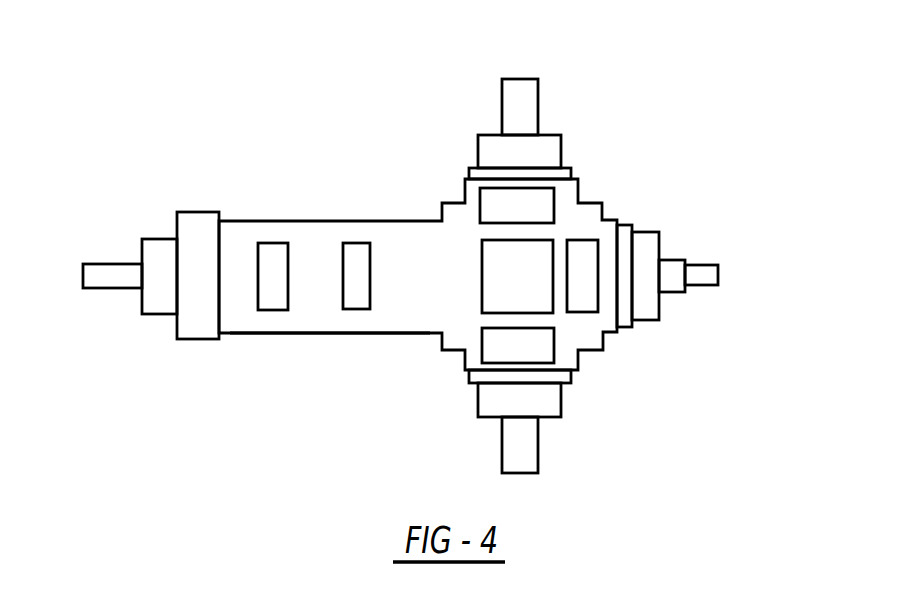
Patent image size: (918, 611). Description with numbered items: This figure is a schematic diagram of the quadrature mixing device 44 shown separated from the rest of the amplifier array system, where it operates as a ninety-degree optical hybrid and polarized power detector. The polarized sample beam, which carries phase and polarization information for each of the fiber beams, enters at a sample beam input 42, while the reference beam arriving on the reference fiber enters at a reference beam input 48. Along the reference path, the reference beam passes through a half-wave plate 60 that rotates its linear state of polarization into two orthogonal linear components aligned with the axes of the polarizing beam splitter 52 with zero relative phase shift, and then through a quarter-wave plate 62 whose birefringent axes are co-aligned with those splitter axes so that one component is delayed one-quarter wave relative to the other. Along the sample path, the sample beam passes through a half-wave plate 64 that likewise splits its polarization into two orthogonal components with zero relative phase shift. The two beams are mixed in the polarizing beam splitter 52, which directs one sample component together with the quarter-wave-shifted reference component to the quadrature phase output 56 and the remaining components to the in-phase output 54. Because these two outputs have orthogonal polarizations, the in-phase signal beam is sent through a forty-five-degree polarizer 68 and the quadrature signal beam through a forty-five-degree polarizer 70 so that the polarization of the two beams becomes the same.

The sample beam input 42 is at (538, 100).
The quadrature mixing device 44 is at (306, 342).
The reference beam input 48 is at (130, 287).
The polarizing beam splitter 52 is at (517, 278).
The in-phase output 54 is at (538, 437).
The quadrature phase output 56 is at (700, 285).
The half-wave plate 60 is at (273, 270).
The quarter-wave plate 62 is at (356, 277).
The half-wave plate 64 is at (497, 205).
The 45° polarizer 68 is at (538, 344).
The 45° polarizer 70 is at (580, 257).